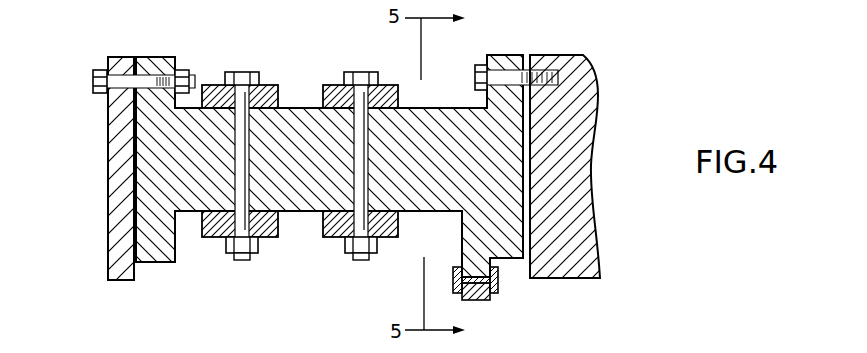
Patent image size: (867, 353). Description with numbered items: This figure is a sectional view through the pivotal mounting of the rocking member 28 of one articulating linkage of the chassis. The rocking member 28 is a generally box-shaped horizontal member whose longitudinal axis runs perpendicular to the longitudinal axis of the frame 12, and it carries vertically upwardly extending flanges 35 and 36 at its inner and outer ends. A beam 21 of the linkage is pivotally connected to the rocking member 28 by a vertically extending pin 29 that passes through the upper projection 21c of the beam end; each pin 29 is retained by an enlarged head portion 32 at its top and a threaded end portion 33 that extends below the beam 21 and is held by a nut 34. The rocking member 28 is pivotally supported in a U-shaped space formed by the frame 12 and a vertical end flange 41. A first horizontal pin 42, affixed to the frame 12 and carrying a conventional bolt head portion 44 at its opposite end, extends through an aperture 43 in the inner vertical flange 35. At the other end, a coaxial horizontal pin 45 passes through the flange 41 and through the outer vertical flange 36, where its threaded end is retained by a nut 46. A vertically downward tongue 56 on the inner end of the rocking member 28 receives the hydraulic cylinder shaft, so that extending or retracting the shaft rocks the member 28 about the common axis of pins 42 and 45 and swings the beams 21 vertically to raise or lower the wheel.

The frame 12 is at (580, 72).
The beam 21 is at (202, 230).
The upper projection 21c is at (213, 85).
The rocking member 28 is at (300, 117).
The pin 29 is at (277, 84).
The enlarged head portion 32 is at (253, 168).
The threaded end portion 33 is at (244, 261).
The nut 34 is at (228, 250).
The inner vertical flange 35 is at (515, 55).
The outer vertical flange 36 is at (152, 56).
The vertical end flange 41 is at (108, 230).
The horizontal pin 42 is at (499, 54).
The aperture 43 is at (523, 102).
The bolt head portion 44 is at (482, 65).
The horizontal pin 45 is at (94, 82).
The nut 46 is at (113, 68).
The tongue 56 is at (487, 298).